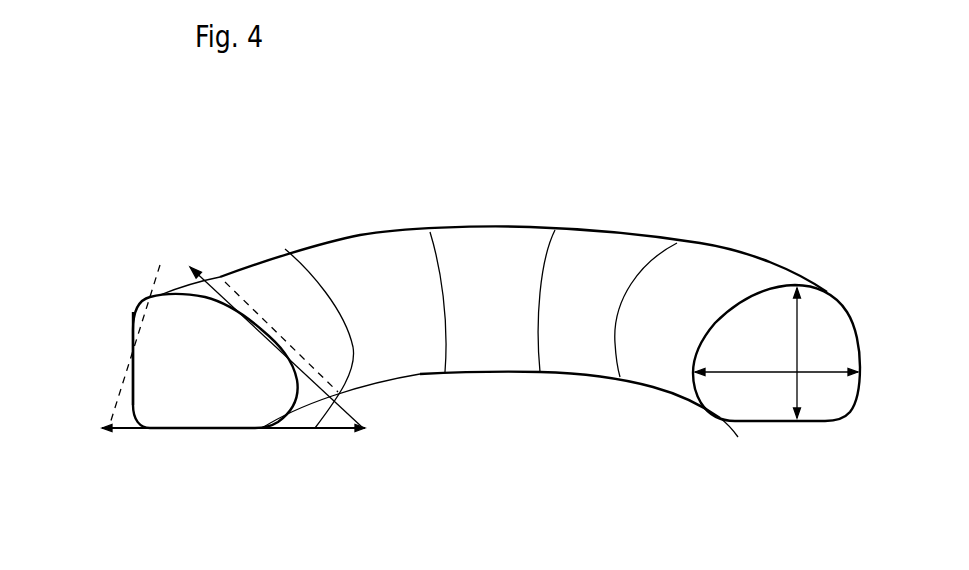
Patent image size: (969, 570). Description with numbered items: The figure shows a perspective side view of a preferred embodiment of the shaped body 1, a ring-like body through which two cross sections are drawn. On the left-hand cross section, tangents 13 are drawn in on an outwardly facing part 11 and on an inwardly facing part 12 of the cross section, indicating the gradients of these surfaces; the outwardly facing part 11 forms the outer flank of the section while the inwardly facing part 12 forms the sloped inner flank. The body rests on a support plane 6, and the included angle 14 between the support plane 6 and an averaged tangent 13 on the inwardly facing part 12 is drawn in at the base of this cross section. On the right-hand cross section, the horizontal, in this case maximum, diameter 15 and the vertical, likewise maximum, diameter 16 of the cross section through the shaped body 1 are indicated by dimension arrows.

The shaped body 1 is at (580, 227).
The support plane 6 is at (203, 430).
The outwardly facing part of the cross section 11 is at (132, 373).
The inwardly facing part of the cross section 12 is at (287, 352).
The tangent 13 is at (222, 280).
The included angle between the support plane and an averaged tangent 14 is at (124, 414).
The horizontal diameter 15 is at (823, 373).
The vertical diameter 16 is at (800, 332).